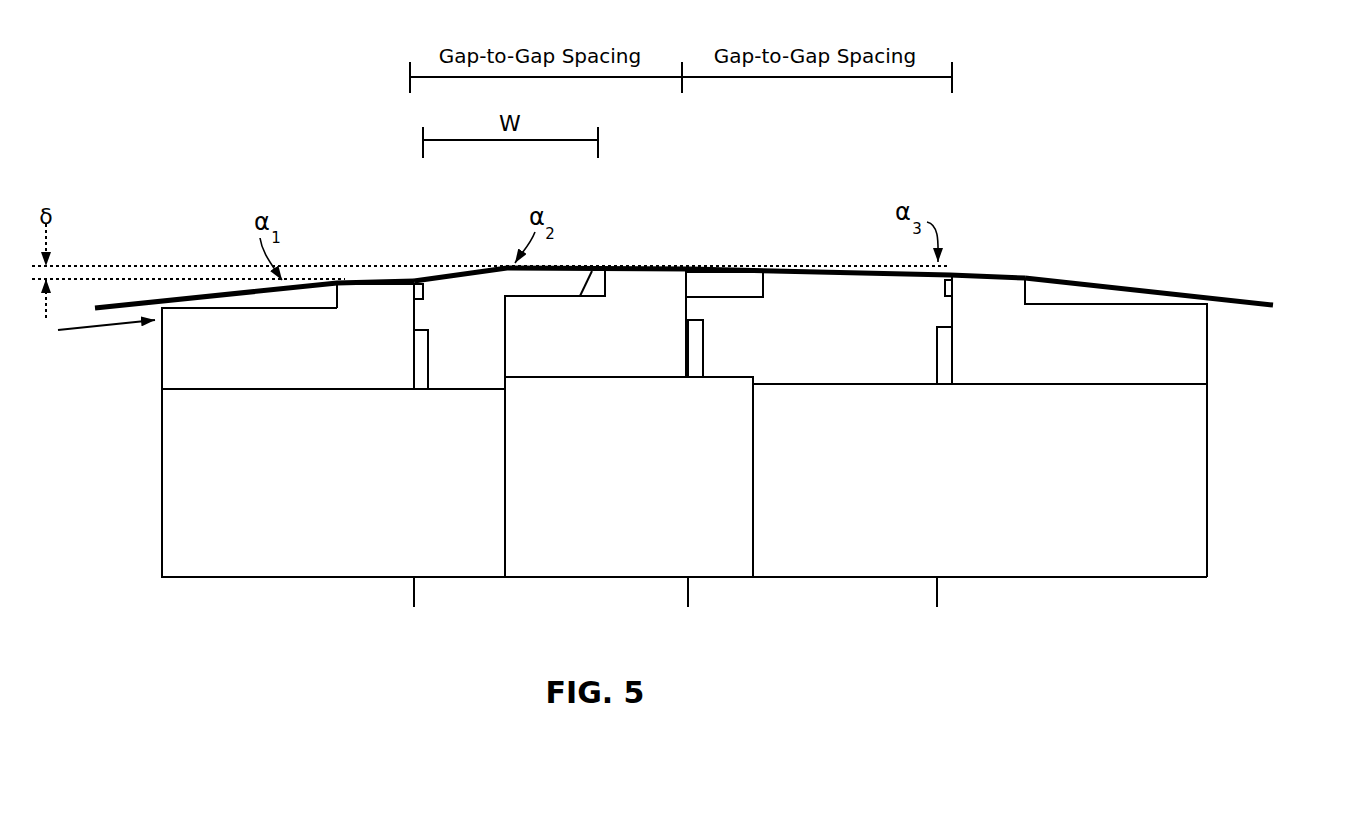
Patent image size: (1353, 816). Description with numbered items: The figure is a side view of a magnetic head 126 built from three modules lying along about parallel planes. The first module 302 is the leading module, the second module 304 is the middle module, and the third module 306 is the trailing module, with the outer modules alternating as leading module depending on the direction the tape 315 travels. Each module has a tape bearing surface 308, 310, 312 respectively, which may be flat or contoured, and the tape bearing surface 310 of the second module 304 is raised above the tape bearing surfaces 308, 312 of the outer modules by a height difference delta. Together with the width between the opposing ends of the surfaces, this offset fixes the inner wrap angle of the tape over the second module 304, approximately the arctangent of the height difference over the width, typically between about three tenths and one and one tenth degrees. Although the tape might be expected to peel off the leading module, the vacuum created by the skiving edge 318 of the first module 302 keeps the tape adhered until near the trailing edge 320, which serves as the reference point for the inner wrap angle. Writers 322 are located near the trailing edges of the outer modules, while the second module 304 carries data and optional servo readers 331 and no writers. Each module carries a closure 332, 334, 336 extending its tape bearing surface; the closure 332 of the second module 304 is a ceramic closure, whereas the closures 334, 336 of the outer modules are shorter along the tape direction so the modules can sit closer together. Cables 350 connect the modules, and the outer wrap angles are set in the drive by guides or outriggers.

The magnetic head 126 is at (323, 152).
The first module 302 is at (162, 352).
The second module 304 is at (580, 296).
The third module 306 is at (1207, 350).
The tape bearing surface 308 is at (385, 275).
The tape bearing surface 310 is at (634, 265).
The tape bearing surface 312 is at (983, 272).
The tape 315 is at (1078, 279).
The skiving edge 318 is at (330, 288).
The trailing edge 320 is at (428, 287).
The writers 322 is at (414, 274).
The data and optional servo readers 331 is at (686, 265).
The closure 332 is at (735, 297).
The closure 334 is at (420, 296).
The closure 336 is at (944, 287).
The cables 350 is at (430, 588).